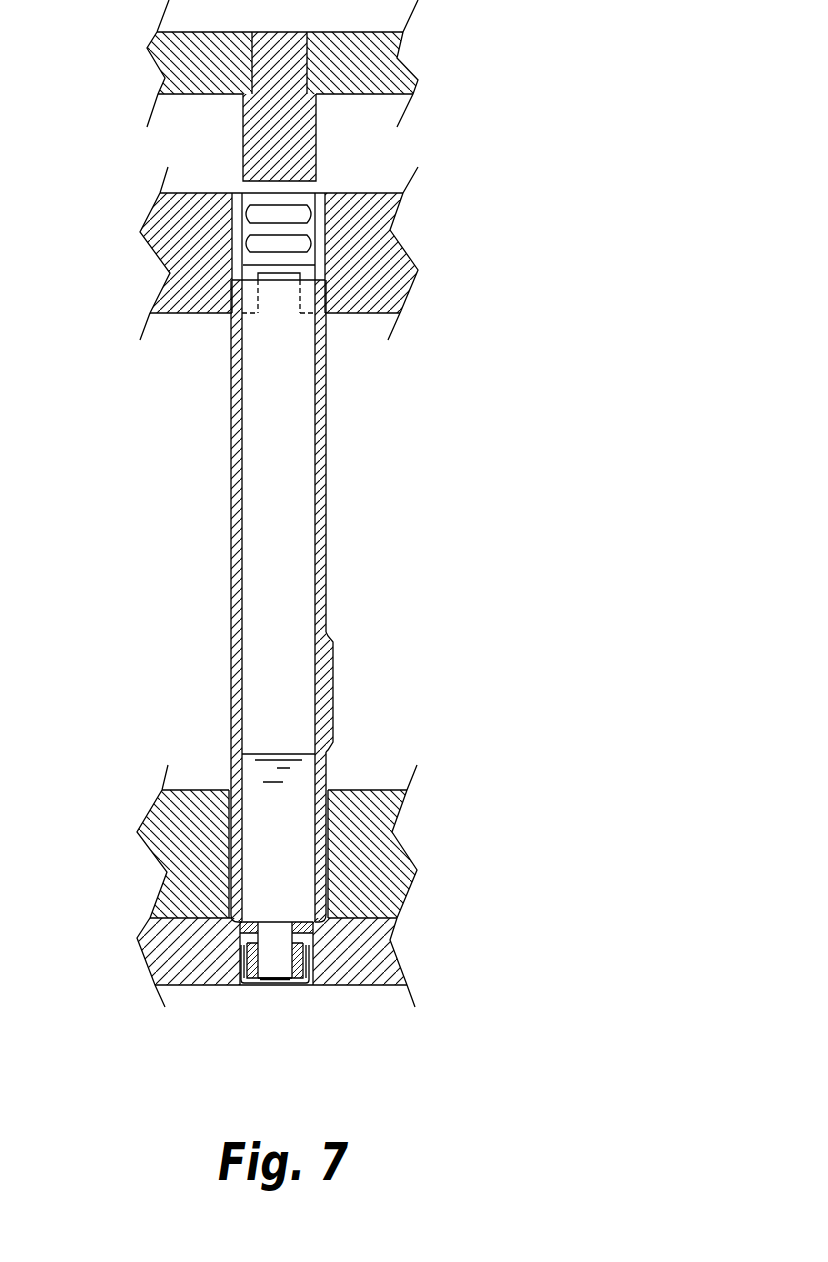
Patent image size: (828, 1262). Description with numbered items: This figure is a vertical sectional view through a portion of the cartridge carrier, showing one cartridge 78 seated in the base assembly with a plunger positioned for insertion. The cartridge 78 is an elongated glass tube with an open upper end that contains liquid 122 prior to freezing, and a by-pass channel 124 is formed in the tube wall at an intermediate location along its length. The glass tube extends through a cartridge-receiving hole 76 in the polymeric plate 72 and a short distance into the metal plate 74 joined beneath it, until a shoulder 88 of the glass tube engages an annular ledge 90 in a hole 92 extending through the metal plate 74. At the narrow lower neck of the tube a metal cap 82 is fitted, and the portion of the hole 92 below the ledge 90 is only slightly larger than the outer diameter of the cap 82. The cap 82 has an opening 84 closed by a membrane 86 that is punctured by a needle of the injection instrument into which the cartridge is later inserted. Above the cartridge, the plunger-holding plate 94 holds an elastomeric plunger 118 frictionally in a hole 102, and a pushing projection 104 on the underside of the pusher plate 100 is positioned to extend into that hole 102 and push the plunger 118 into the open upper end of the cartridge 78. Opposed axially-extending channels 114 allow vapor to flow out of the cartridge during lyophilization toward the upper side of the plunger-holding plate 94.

The pusher plate 100 is at (398, 62).
The pushing projection 104 is at (257, 125).
The axially-extending channel 114 is at (330, 193).
The elastomeric plunger 118 is at (253, 228).
The hole 102 is at (328, 233).
The plunger-holding plate 94 is at (390, 289).
The cartridge 78 is at (328, 502).
The by-pass channel 124 is at (323, 675).
The liquid 122 is at (255, 755).
The cartridge-receiving hole 76 is at (330, 822).
The polymeric plate 72 is at (397, 855).
The annular ledge 90 is at (230, 908).
The hole 92 is at (316, 936).
The shoulder 88 is at (240, 932).
The metal plate 74 is at (383, 963).
The opening 84 is at (238, 965).
The membrane 86 is at (285, 981).
The metal cap 82 is at (313, 967).